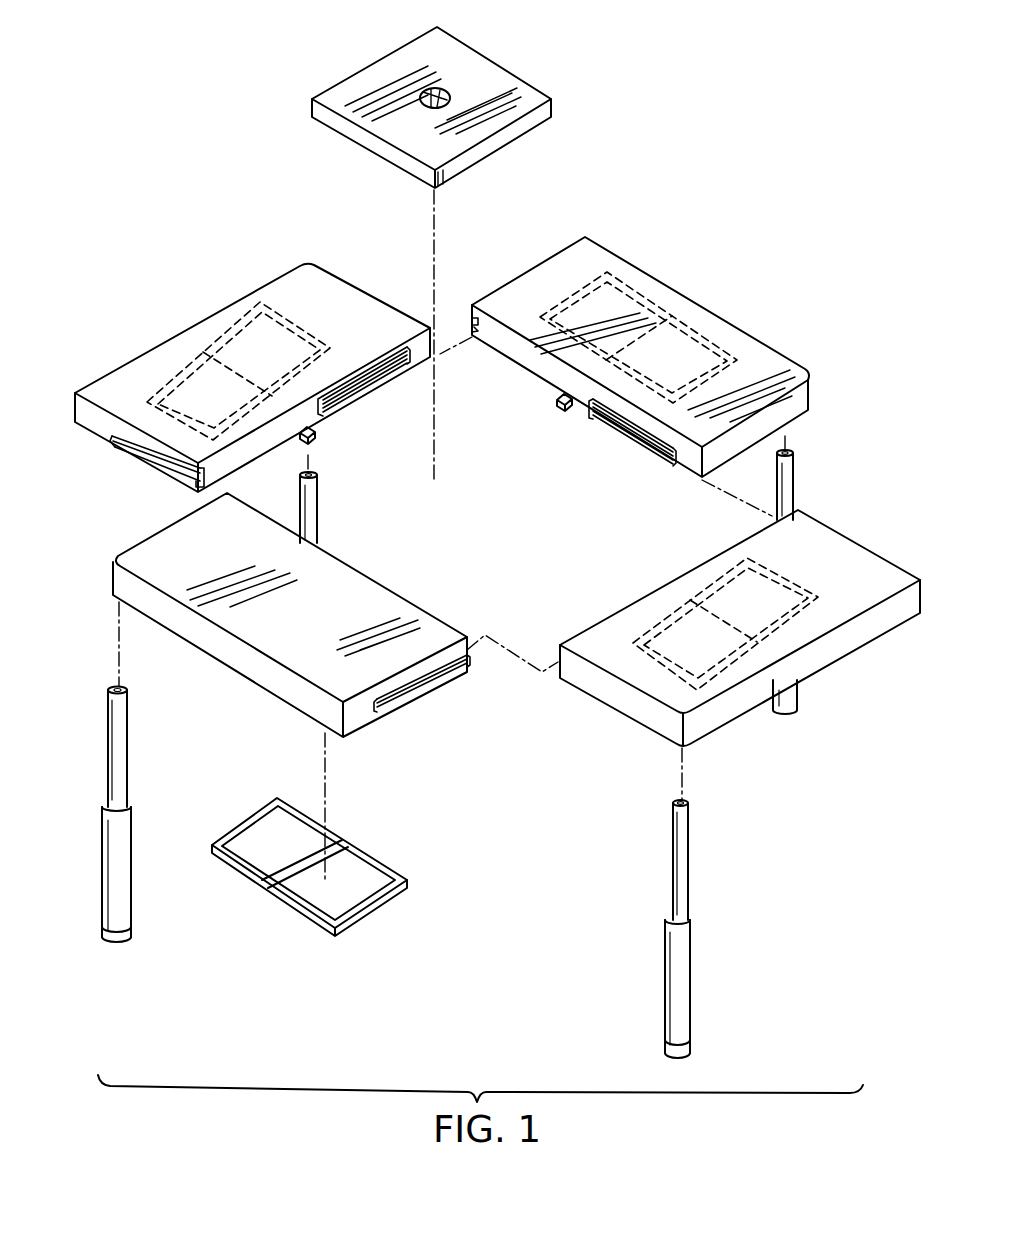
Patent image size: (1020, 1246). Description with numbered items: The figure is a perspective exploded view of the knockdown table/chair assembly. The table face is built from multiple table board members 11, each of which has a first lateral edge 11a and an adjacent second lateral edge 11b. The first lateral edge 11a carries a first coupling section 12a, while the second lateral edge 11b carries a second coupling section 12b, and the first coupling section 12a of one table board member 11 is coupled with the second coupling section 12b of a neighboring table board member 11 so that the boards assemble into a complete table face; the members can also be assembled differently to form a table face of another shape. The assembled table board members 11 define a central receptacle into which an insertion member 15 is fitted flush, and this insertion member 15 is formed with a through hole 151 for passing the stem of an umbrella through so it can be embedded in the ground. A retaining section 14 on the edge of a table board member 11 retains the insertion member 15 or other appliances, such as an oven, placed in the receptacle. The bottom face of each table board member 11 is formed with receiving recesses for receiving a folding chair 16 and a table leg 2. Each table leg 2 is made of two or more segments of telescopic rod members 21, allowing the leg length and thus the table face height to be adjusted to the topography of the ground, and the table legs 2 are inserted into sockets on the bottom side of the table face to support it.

The table leg 2 is at (318, 508).
The telescopic rod member 21 is at (118, 725).
The table board member 11 is at (135, 367).
The first lateral edge 11a is at (265, 442).
The second lateral edge 11b is at (92, 420).
The first coupling section 12a is at (380, 387).
The second coupling section 12b is at (133, 453).
The retaining section 14 is at (312, 437).
The insertion member 15 is at (498, 75).
The through hole 151 is at (420, 100).
The folding chair 16 is at (248, 323).